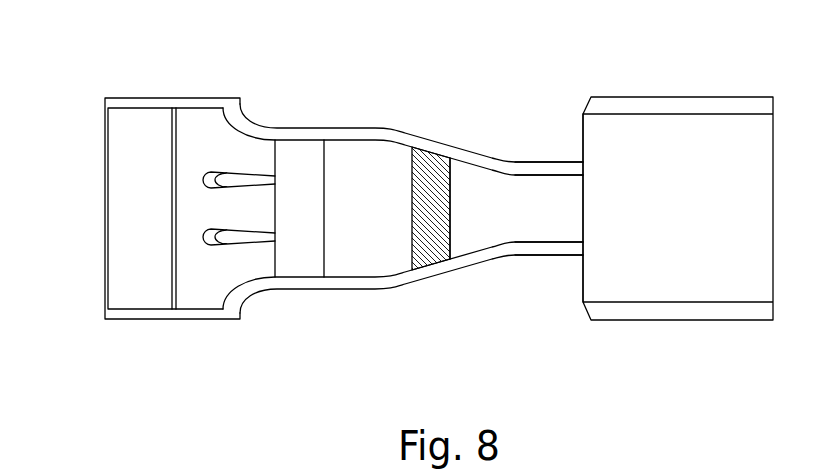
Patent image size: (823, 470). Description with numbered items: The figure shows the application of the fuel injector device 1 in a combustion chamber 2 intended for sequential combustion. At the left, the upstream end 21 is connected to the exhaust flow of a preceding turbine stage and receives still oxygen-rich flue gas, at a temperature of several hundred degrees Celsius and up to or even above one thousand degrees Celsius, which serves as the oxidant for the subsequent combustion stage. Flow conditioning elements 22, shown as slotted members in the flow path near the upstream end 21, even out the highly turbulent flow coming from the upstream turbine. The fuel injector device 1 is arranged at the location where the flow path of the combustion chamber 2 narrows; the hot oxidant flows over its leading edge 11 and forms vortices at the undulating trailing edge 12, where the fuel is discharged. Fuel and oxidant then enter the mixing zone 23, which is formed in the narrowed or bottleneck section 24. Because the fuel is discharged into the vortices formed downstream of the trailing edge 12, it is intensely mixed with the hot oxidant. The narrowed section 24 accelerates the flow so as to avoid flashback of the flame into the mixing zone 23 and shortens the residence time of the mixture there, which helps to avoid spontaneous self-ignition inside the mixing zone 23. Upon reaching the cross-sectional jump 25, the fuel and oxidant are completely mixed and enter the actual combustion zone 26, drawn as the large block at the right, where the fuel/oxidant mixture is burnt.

The fuel injector device 1 is at (430, 138).
The combustion chamber 2 is at (362, 96).
The leading edge 11 is at (412, 242).
The undulating trailing edge 12 is at (450, 248).
The upstream end 21 is at (115, 128).
The flow conditioning elements 22 is at (203, 273).
The mixing zone 23 is at (525, 208).
The narrowed section 24 is at (582, 157).
The cross-sectional jump 25 is at (573, 203).
The combustion zone 26 is at (660, 107).